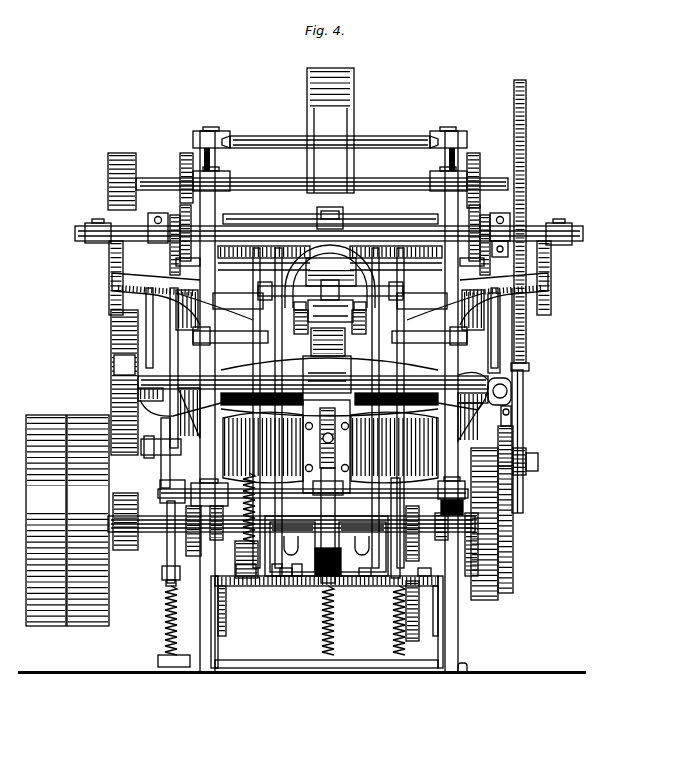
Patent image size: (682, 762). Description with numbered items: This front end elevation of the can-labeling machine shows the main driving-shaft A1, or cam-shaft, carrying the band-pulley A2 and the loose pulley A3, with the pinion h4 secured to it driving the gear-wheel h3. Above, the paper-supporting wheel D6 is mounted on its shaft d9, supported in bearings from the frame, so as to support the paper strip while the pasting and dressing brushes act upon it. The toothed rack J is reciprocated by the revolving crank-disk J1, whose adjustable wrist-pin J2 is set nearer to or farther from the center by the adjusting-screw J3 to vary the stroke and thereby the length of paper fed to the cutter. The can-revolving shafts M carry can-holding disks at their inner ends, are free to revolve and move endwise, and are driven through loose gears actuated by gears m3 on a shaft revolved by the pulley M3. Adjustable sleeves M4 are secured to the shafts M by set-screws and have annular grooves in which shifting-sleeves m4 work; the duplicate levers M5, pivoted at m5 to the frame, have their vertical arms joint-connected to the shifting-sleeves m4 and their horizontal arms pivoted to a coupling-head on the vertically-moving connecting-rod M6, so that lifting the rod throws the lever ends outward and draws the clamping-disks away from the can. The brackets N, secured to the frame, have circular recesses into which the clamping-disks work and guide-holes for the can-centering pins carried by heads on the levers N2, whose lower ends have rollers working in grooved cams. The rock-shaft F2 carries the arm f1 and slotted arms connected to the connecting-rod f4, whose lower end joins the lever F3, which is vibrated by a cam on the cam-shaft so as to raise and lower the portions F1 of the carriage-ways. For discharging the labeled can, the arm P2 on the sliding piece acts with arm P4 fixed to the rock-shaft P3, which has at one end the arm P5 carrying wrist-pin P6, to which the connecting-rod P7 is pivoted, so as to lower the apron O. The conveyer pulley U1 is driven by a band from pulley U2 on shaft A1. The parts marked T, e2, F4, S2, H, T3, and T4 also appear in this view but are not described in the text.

The paper-supporting wheel D6 is at (343, 93).
The shaft d9 is at (372, 130).
The toothed rack J is at (519, 120).
The pulley M3 is at (112, 146).
The gears m3 is at (172, 157).
The adjustable sleeves M4 is at (158, 197).
The shifting-sleeve m4 is at (140, 222).
The brackets N is at (284, 208).
The block T is at (330, 210).
The lever F3 is at (405, 268).
The can-revolving shafts M is at (101, 245).
The arch e2 is at (279, 264).
The rock-shaft F2 is at (331, 271).
The apron O is at (330, 311).
The arm f1 is at (298, 300).
The block F4 is at (328, 323).
The block S2 is at (296, 350).
The rod H is at (329, 408).
The levers N2 is at (252, 298).
The connecting-rod f4 is at (396, 354).
The pulley U2 is at (326, 491).
The levers M5 is at (103, 305).
The pulley U1 is at (124, 365).
The pivots m5 is at (130, 376).
The adjusting-screw J3 is at (504, 406).
The connecting-rod P7 is at (153, 428).
The wrist-pin P6 is at (138, 448).
The arm P5 is at (155, 477).
The loose pulley A3 is at (46, 520).
The band-pulley A2 is at (88, 520).
The main driving-shaft A1 is at (152, 524).
The rod T3 is at (160, 548).
The nut T4 is at (158, 567).
The rock-shaft P3 is at (160, 606).
The crank-disk J1 is at (506, 492).
The wrist-pin J2 is at (531, 456).
The carriage-way portions F1 is at (378, 586).
The gear-wheel h3 is at (390, 614).
The connecting-rod M6 is at (316, 588).
The arm P2 is at (270, 570).
The arm P4 is at (290, 570).
The pinion h4 is at (411, 541).